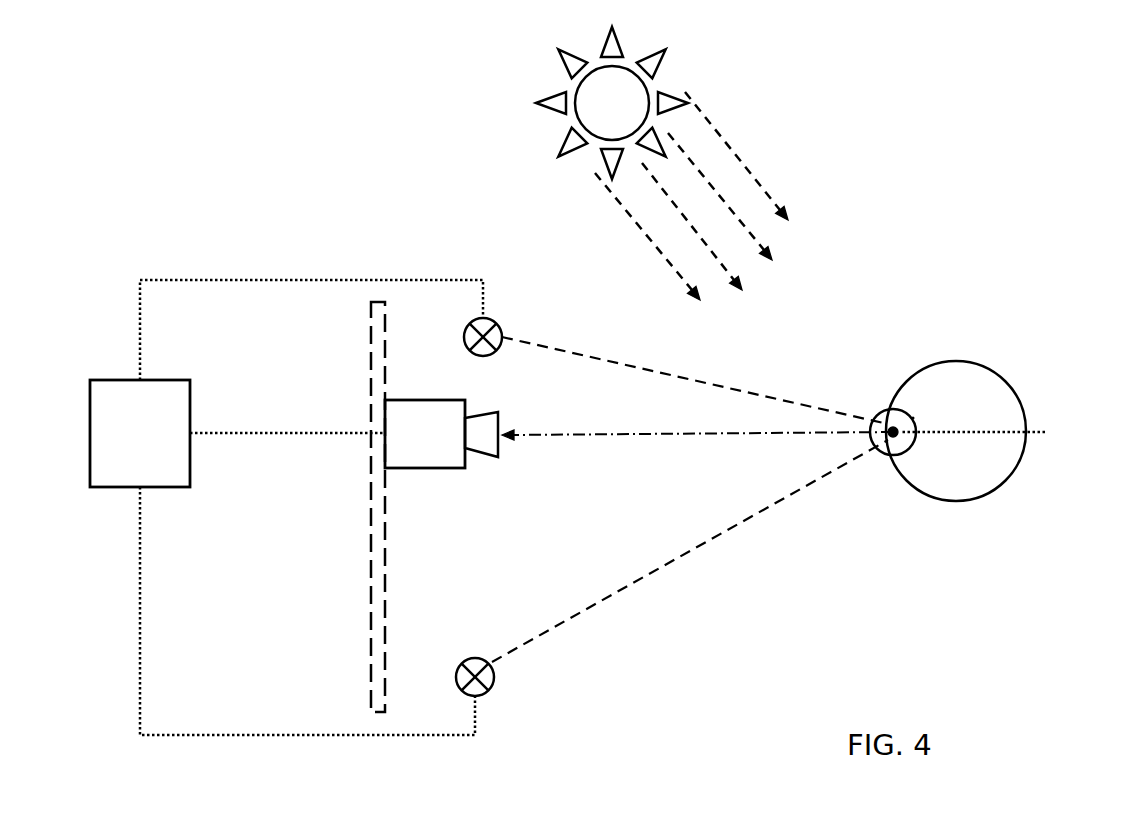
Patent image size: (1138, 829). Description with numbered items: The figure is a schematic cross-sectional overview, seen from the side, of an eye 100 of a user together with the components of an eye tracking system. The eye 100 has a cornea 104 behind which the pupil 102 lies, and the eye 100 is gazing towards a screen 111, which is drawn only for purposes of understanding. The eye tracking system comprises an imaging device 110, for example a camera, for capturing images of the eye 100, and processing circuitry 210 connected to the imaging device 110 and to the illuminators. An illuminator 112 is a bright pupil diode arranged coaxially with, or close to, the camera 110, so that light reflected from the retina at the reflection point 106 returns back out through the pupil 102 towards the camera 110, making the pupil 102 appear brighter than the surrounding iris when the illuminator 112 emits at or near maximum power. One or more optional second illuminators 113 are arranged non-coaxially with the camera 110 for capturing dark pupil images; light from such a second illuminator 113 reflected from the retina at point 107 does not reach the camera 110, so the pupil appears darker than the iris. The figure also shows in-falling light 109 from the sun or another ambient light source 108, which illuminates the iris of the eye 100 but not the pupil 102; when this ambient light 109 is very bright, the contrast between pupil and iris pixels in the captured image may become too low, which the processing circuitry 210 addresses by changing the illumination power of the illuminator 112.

The eye 100 is at (940, 322).
The pupil 102 is at (891, 444).
The cornea 104 is at (908, 456).
The reflection 106 is at (925, 432).
The point 107 is at (926, 412).
The ambient light source 108 is at (493, 101).
The in-falling light 109 is at (773, 154).
The imaging device 110 is at (427, 400).
The screen 111 is at (378, 298).
The illuminator 112 is at (497, 320).
The second illuminator 113 is at (487, 693).
The processing circuitry 210 is at (286, 507).